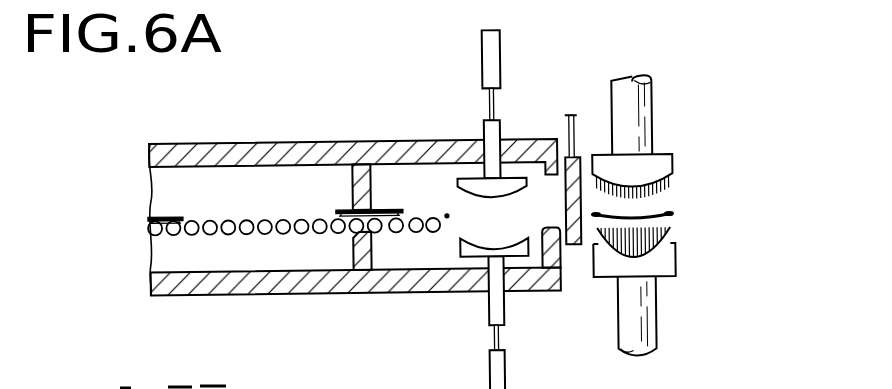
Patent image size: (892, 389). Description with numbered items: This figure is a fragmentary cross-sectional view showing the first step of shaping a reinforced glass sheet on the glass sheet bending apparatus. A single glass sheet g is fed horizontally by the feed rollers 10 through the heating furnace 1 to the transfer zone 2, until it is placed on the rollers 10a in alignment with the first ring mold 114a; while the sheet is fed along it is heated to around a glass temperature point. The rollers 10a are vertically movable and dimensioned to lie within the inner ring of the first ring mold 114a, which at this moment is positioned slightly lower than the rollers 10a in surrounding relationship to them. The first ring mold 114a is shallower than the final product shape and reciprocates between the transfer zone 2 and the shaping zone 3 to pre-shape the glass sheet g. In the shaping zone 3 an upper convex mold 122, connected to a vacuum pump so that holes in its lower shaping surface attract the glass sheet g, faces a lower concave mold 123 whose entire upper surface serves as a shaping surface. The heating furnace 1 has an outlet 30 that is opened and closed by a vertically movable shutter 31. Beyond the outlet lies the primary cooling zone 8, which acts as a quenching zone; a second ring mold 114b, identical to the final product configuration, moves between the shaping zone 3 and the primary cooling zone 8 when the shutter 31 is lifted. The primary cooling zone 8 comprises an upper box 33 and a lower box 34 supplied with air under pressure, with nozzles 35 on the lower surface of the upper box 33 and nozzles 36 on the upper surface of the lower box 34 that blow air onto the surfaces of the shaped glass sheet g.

The heating furnace 1 is at (245, 141).
The transfer zone 2 is at (387, 194).
The shaping zone 3 is at (519, 219).
The primary cooling zone 8 is at (681, 137).
The feed rollers 10 is at (210, 234).
The rollers 10a is at (416, 234).
The outlet 30 is at (546, 252).
The shutter 31 is at (578, 158).
The upper box 33 is at (675, 166).
The lower box 34 is at (660, 276).
The nozzles 35 is at (674, 186).
The nozzles 36 is at (672, 233).
The first ring mold 114a is at (384, 220).
The second ring mold 114b is at (674, 219).
The upper convex mold 122 is at (472, 180).
The lower concave mold 123 is at (468, 259).
The glass sheet g is at (150, 213).